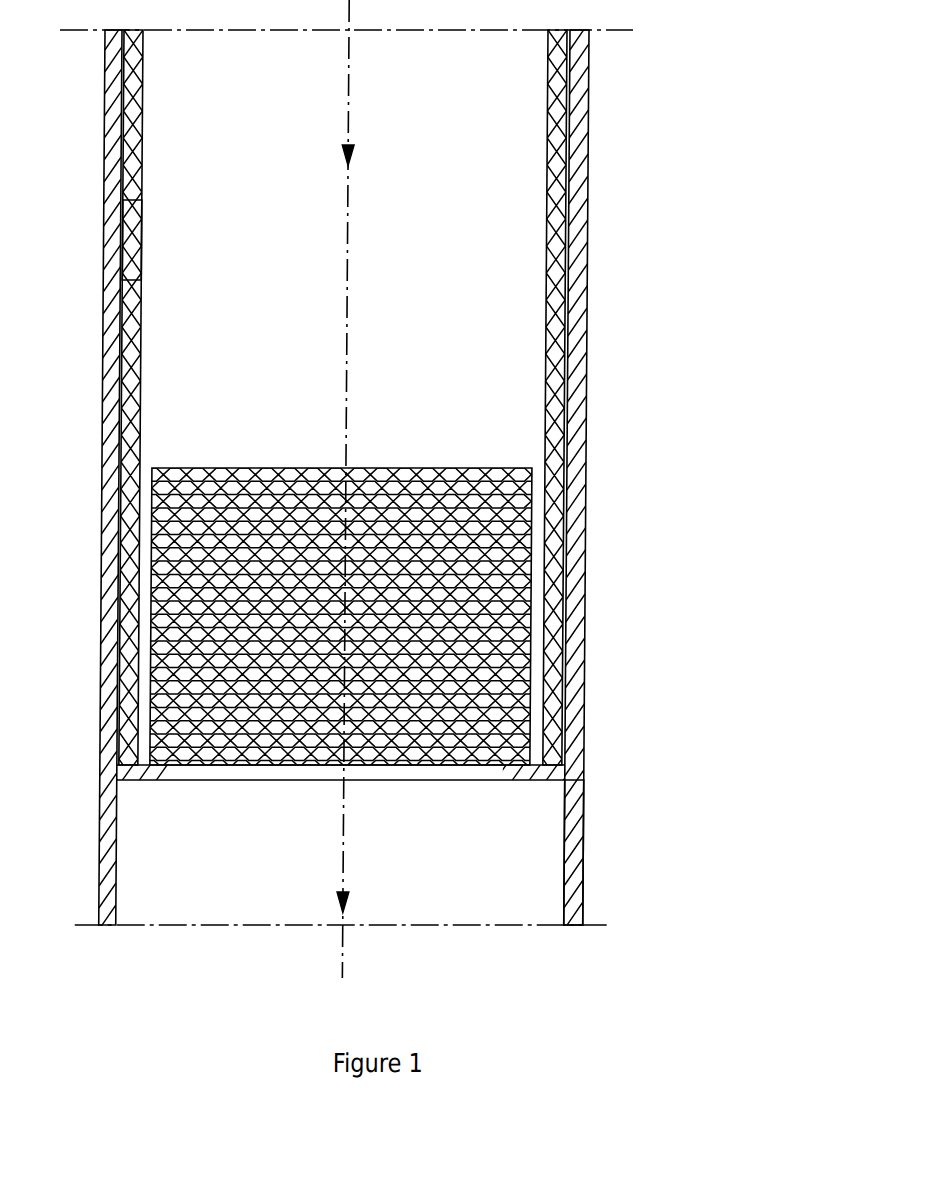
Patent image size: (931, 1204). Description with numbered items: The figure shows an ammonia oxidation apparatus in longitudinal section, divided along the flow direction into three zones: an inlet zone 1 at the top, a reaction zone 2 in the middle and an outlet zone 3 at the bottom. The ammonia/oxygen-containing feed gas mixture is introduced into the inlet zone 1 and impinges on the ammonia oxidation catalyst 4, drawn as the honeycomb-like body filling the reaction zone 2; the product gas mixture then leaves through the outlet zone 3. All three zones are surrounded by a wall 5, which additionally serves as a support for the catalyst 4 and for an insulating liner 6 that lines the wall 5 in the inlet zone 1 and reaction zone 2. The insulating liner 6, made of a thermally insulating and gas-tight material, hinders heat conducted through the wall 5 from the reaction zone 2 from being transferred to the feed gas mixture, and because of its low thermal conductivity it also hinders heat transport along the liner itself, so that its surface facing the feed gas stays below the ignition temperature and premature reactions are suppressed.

The inlet zone 1 is at (677, 29).
The reaction zone 2 is at (677, 468).
The outlet zone 3 is at (677, 767).
The ammonia oxidation catalyst 4 is at (370, 768).
The wall 5 is at (588, 920).
The insulating liner 6 is at (142, 238).